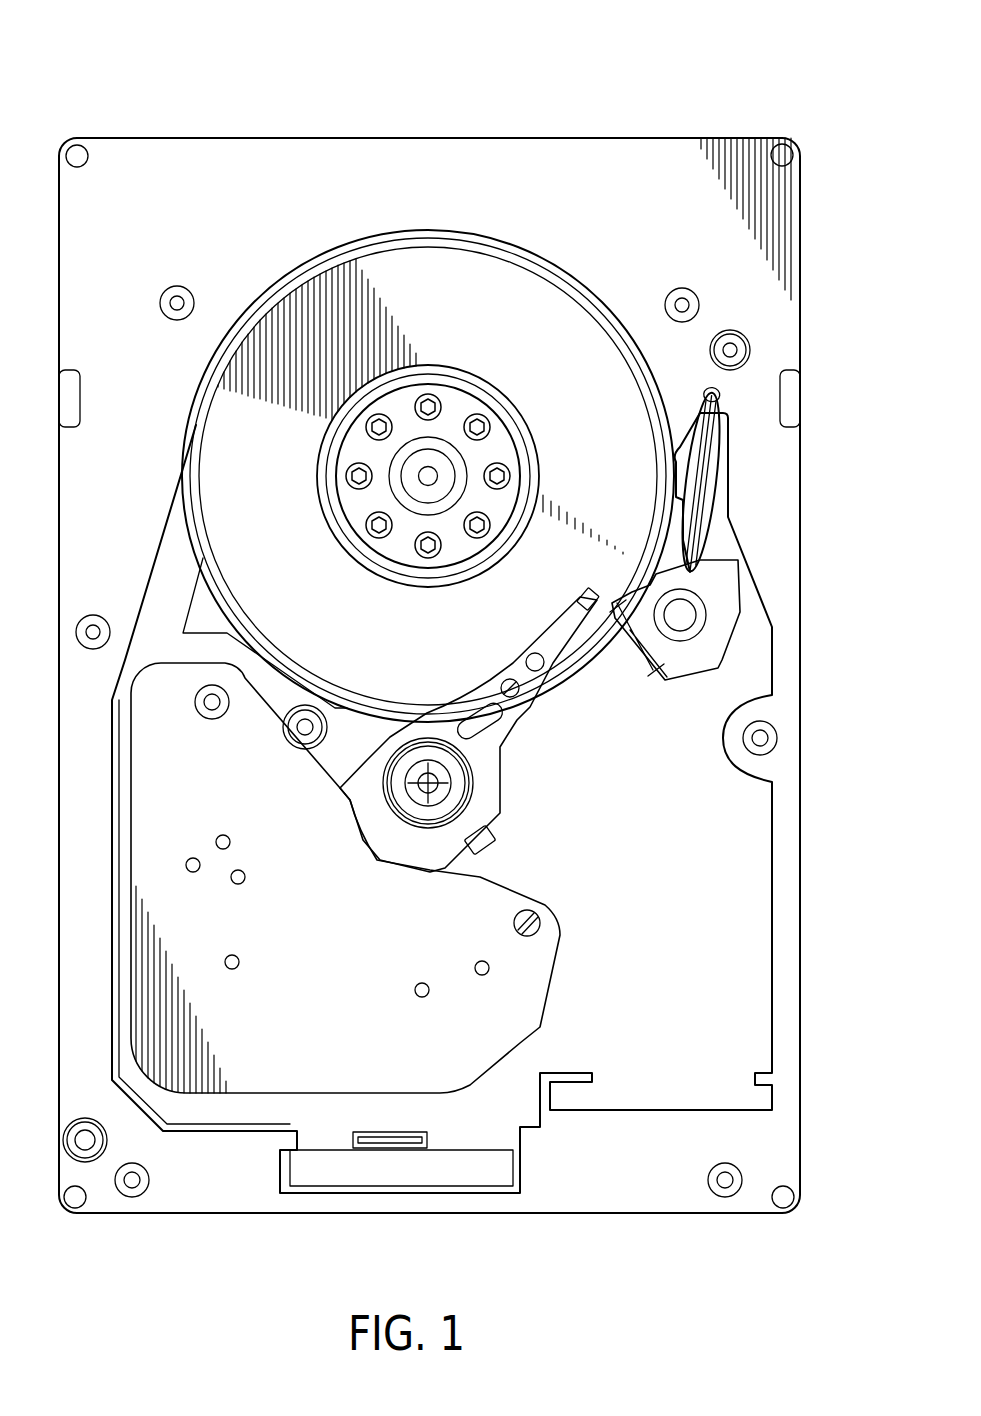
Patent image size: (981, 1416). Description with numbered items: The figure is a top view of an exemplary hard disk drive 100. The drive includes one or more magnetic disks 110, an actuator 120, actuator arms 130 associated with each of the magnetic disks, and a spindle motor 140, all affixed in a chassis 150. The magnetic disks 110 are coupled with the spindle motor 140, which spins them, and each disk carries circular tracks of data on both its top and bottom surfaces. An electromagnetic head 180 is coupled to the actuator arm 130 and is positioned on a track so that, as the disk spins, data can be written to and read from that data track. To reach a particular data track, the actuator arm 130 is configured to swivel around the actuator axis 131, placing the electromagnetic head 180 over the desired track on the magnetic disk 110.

The hard disk drive 100 is at (636, 52).
The magnetic disk 110 is at (522, 288).
The actuator 120 is at (530, 985).
The actuator arm 130 is at (517, 670).
The actuator axis 131 is at (438, 790).
The spindle motor 140 is at (420, 480).
The chassis 150 is at (190, 140).
The electromagnetic head 180 is at (580, 596).